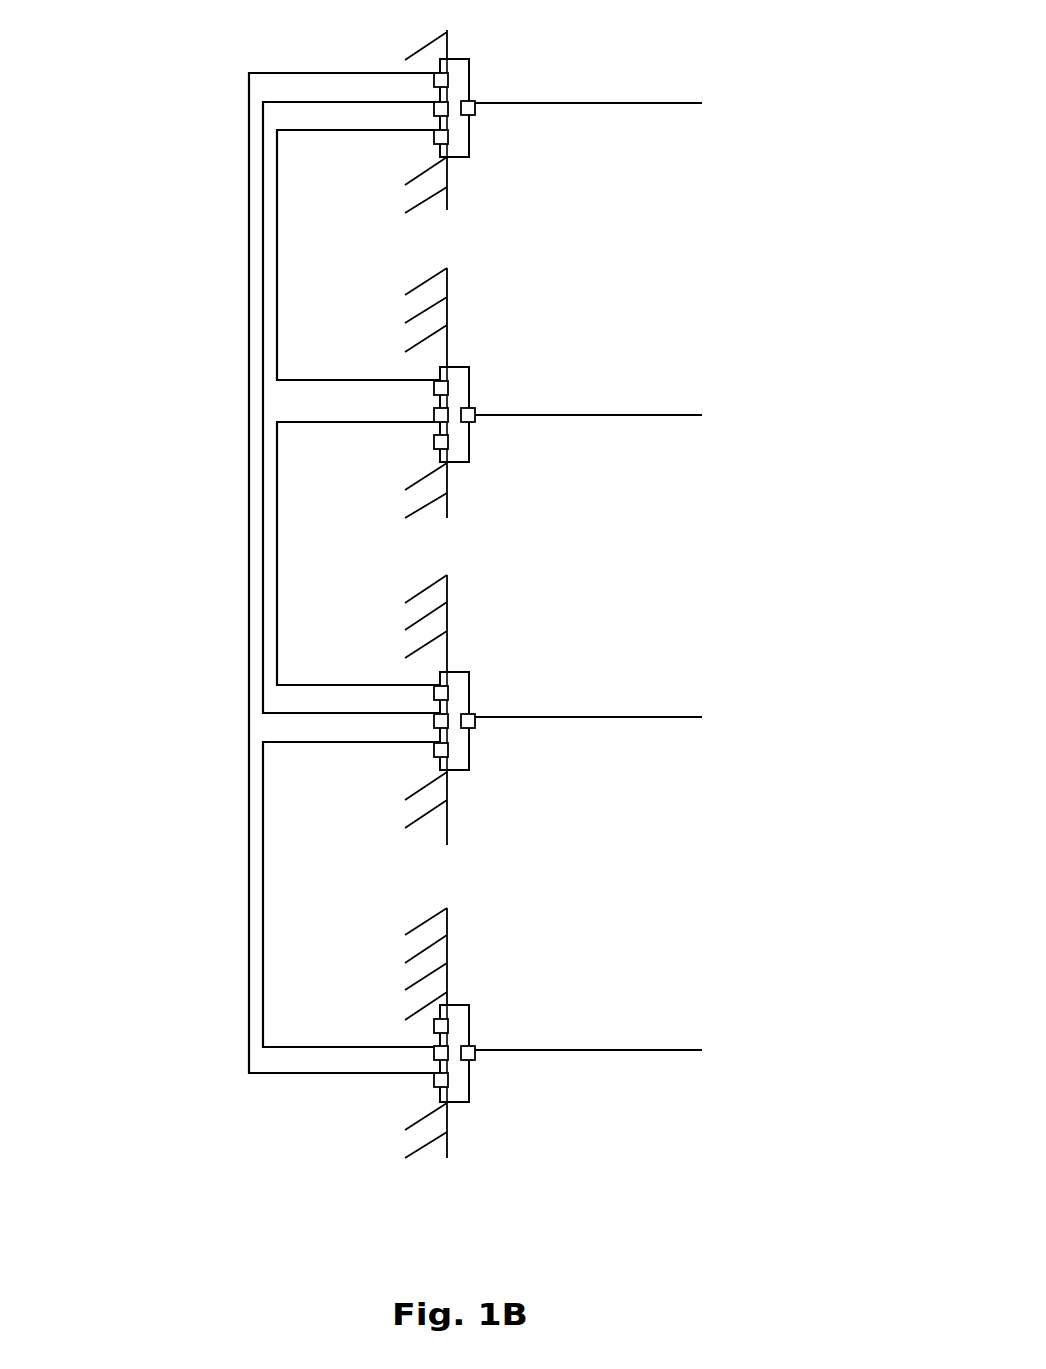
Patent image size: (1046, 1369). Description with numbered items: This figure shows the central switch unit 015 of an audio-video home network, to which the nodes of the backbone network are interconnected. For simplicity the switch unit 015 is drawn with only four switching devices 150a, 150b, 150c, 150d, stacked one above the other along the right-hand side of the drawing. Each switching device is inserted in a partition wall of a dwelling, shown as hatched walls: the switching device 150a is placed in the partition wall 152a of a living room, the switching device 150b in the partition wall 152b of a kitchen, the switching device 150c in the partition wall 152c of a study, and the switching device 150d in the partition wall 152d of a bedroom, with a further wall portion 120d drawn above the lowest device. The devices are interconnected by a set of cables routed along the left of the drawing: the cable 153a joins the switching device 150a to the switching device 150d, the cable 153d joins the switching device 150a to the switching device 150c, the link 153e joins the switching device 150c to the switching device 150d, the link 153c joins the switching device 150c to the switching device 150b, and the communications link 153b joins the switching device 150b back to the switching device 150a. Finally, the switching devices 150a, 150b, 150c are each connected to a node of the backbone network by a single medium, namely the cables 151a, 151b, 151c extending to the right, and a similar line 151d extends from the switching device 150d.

The central switch unit 015 is at (202, 428).
The ground connection 120d is at (450, 972).
The switching device 150a is at (477, 142).
The switching device 150b is at (466, 455).
The switching device 150c is at (463, 682).
The switching device 150d is at (473, 1102).
The cable 151a is at (587, 103).
The cable 151b is at (588, 422).
The cable 151c is at (588, 717).
The output line 151d is at (547, 1050).
The partition wall 152a is at (448, 212).
The partition wall 152b is at (448, 518).
The partition wall 152c is at (448, 845).
The partition wall 152d is at (448, 1158).
The cable 153a is at (263, 72).
The communications link 153b is at (375, 380).
The link 153c is at (347, 423).
The cable 153d is at (263, 610).
The link 153e is at (365, 770).